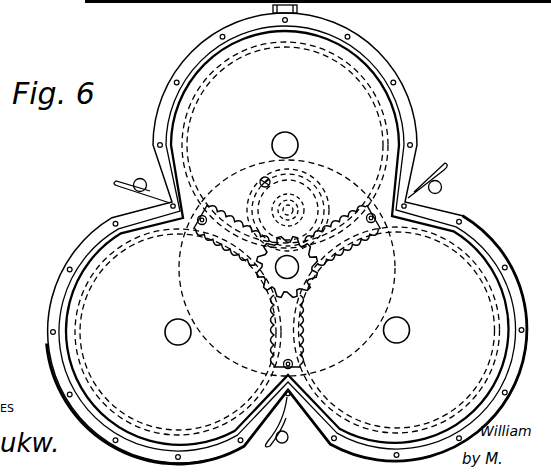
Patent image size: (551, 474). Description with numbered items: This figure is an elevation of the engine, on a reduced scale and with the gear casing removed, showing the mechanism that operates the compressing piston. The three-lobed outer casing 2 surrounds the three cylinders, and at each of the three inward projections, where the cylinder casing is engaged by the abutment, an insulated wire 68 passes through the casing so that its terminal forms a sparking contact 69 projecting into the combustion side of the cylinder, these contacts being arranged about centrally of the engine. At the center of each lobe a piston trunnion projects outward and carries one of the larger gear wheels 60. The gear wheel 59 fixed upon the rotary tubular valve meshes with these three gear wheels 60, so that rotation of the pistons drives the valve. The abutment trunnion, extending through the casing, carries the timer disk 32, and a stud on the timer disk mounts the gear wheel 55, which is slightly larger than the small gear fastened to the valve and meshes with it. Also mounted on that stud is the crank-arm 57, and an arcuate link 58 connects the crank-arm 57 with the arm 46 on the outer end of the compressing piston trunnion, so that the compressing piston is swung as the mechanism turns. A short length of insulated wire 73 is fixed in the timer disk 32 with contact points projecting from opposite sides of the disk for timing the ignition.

The outer casing 2 is at (492, 255).
The timer disk 32 is at (406, 199).
The arm 46 is at (318, 232).
The gear wheel 55 is at (262, 185).
The crank-arm 57 is at (290, 180).
The arcuate link 58 is at (313, 190).
The gear wheel 59 is at (264, 277).
The gear wheels 60 is at (287, 238).
The insulated wires 68 is at (298, 452).
The sparking contacts 69 is at (266, 368).
The insulated wire 73 is at (203, 226).